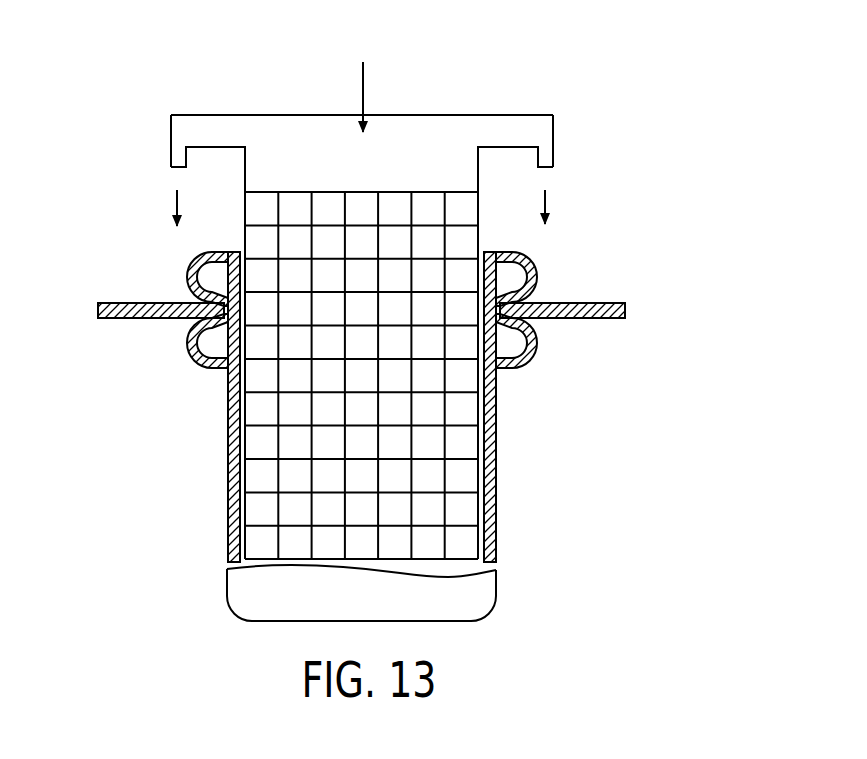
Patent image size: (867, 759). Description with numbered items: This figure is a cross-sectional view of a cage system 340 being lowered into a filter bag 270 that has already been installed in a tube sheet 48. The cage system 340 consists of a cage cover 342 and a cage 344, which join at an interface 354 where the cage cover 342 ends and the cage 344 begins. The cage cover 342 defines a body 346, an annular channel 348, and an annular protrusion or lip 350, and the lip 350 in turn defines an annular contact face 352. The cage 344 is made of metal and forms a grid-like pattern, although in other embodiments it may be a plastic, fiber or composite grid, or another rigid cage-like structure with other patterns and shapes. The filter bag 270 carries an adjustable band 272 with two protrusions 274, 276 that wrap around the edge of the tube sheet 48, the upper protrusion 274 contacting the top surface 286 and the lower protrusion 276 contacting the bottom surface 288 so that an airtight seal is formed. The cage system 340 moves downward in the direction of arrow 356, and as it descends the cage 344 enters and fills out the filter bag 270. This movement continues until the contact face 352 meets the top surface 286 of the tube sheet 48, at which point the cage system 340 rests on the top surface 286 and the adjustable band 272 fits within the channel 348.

The cage system 340 is at (589, 72).
The cage cover 342 is at (483, 95).
The cage 344 is at (483, 473).
The body 346 is at (326, 135).
The annular channel 348 is at (215, 199).
The annular protrusion or lip 350 is at (182, 134).
The annular contact face 352 is at (176, 172).
The interface 354 is at (295, 192).
The arrow 356 is at (175, 208).
The filter bag 270 is at (478, 597).
The adjustable band 272 is at (194, 375).
The protrusion 274 is at (190, 266).
The protrusion 276 is at (187, 354).
The tube sheet 48 is at (111, 339).
The top surface 286 is at (618, 302).
The bottom surface 288 is at (618, 318).